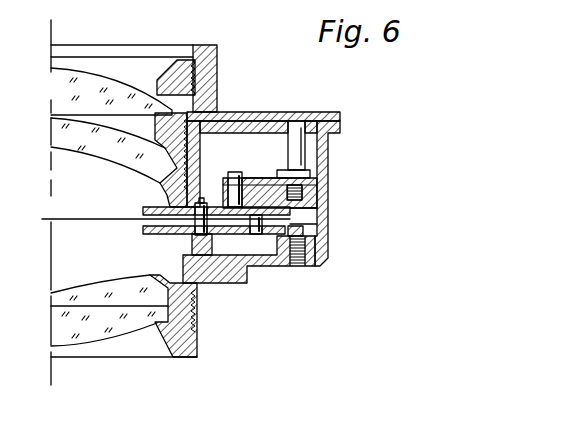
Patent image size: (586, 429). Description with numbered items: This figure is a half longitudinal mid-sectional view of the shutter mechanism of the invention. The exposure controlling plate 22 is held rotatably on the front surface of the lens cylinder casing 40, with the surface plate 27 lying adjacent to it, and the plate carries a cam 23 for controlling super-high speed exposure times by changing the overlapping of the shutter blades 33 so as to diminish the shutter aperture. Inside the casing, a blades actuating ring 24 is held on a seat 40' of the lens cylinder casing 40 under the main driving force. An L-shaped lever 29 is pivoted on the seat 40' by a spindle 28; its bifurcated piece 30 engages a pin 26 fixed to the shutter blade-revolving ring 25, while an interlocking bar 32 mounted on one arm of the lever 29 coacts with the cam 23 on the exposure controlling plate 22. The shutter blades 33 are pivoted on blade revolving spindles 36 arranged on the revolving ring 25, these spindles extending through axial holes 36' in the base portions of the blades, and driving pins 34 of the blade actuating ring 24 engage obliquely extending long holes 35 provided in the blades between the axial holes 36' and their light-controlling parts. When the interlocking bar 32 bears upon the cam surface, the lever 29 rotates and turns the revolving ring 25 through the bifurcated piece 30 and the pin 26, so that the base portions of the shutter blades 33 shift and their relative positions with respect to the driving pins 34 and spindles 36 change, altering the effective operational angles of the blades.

The exposure controlling plate 22 is at (340, 122).
The cam 23 is at (295, 120).
The blades actuating ring 24 is at (168, 200).
The shutter blade-revolving ring 25 is at (143, 210).
The pin 26 is at (241, 176).
The surface plate 27 is at (313, 113).
The spindle 28 is at (312, 177).
The L-shaped lever 29 is at (268, 176).
The bifurcated piece 30 is at (229, 172).
The interlocking bar 32 is at (305, 149).
The shutter blades 33 is at (72, 220).
The driving pins 34 is at (205, 238).
The obliquely extending long holes 35 is at (226, 238).
The blade revolving spindles 36 is at (276, 255).
The axial holes 36' is at (310, 267).
The lens cylinder casing 40 is at (291, 194).
The seat 40' is at (330, 219).